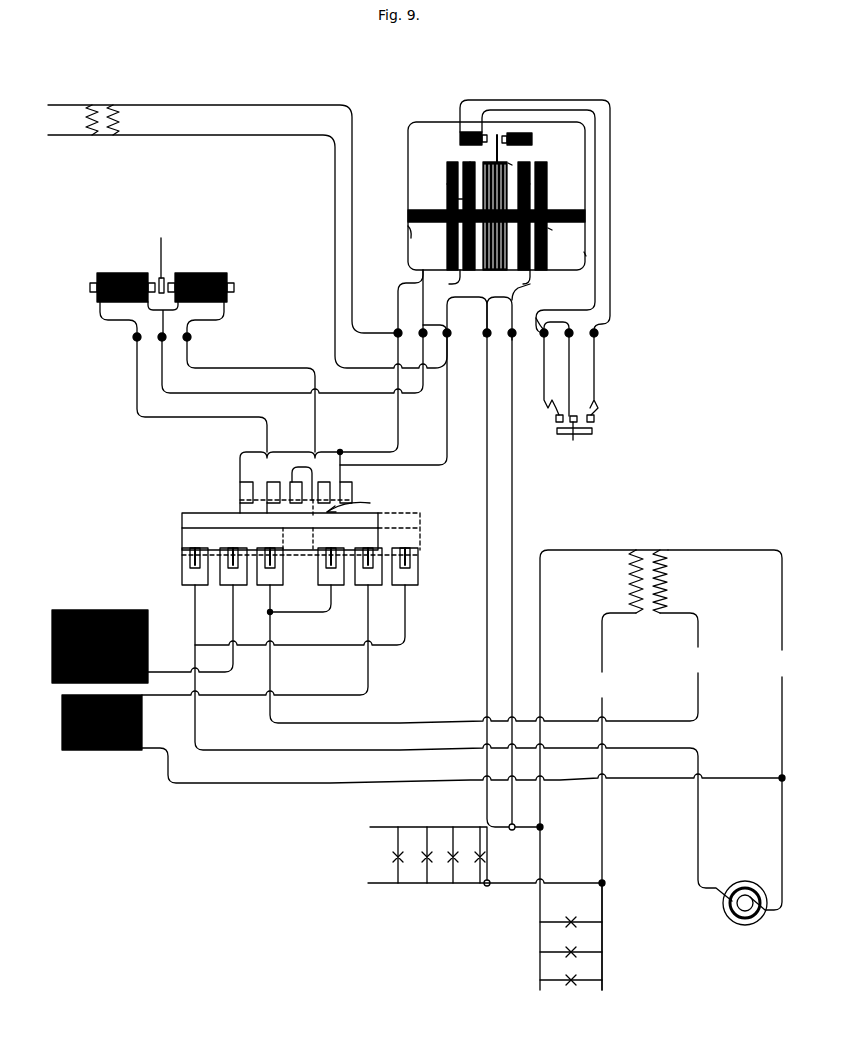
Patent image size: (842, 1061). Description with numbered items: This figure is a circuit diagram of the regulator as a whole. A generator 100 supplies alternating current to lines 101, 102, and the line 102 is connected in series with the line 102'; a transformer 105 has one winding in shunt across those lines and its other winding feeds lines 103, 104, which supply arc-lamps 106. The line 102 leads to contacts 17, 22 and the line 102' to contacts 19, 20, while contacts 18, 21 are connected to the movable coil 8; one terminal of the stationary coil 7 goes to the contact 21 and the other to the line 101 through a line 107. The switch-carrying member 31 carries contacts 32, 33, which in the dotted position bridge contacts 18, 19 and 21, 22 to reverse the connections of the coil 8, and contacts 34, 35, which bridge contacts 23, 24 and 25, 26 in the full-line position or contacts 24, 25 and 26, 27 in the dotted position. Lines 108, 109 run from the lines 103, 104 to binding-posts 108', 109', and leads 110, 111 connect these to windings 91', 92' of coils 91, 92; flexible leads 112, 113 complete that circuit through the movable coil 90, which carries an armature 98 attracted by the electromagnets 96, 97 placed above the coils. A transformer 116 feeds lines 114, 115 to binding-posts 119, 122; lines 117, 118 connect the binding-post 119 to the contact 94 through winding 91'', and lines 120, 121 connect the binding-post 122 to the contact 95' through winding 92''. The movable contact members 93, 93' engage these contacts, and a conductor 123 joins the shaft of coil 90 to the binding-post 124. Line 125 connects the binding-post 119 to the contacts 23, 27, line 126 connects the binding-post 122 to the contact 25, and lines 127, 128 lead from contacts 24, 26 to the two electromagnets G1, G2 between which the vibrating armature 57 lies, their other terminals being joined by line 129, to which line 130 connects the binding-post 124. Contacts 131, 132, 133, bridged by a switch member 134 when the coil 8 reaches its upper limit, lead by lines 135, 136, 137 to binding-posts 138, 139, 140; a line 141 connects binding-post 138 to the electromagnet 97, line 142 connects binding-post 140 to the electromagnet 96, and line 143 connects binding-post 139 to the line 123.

The stationary coil 7 is at (62, 720).
The movable coil 8 is at (52, 627).
The contact 17 is at (186, 583).
The contact 18 is at (236, 585).
The contact 19 is at (278, 584).
The contact 20 is at (339, 584).
The contact 21 is at (376, 584).
The contact 22 is at (414, 584).
The contact 23 is at (246, 492).
The contact 24 is at (272, 492).
The contact 25 is at (296, 492).
The contact 26 is at (322, 492).
The contact 27 is at (357, 490).
The switch-carrying member 31 is at (192, 518).
The contact 32 is at (202, 537).
The contact 33 is at (362, 535).
The contact 34 is at (243, 514).
The contact 35 is at (364, 503).
The vibrating armature 57 is at (164, 268).
The generator G1 is at (112, 276).
The generator G2 is at (212, 277).
The movable coil 90 is at (495, 224).
The coil 91 is at (461, 230).
The winding 91' is at (443, 200).
The winding 91'' is at (435, 179).
The coil 92 is at (532, 231).
The winding 92' is at (554, 166).
The winding 92'' is at (558, 178).
The movable contact member 93 is at (480, 240).
The movable contact member 93' is at (561, 200).
The contact member 94 is at (408, 209).
The pivot 95' is at (561, 234).
The electromagnet 96 is at (460, 137).
The electromagnet 97 is at (532, 137).
The armature 98 is at (487, 149).
The generator 100 is at (748, 927).
The line 101 is at (782, 702).
The line 102 is at (465, 743).
The line 102' is at (502, 654).
The line 103 is at (603, 552).
The line 104 is at (602, 620).
The transformer 105 is at (665, 598).
The arc-lamps 106 is at (430, 864).
The line 107 is at (268, 784).
The line 108 is at (513, 579).
The binding-post 108' is at (472, 346).
The line 109 is at (528, 579).
The binding-post 109' is at (530, 347).
The lead 110 is at (487, 309).
The lead 111 is at (512, 313).
The flexible lead 112 is at (472, 162).
The flexible lead 113 is at (510, 163).
The line 114 is at (335, 190).
The line 115 is at (352, 120).
The transformer 116 is at (107, 137).
The line 117 is at (408, 238).
The line 118 is at (397, 300).
The binding-post 119 is at (396, 337).
The line 120 is at (586, 252).
The line 121 is at (568, 290).
The binding-post 122 is at (448, 345).
The conductor 123 is at (424, 311).
The binding-post 124 is at (421, 338).
The line 125 is at (398, 438).
The line 126 is at (448, 438).
The line 127 is at (200, 424).
The line 128 is at (236, 371).
The line 129 is at (174, 306).
The line 130 is at (226, 397).
The contact 131 is at (556, 419).
The contact 132 is at (577, 430).
The contact 133 is at (597, 418).
The switch member 134 is at (594, 432).
The line 135 is at (545, 386).
The line 136 is at (570, 386).
The line 137 is at (596, 386).
The binding-post 138 is at (560, 323).
The binding-post 139 is at (571, 336).
The binding-post 140 is at (598, 335).
The line 141 is at (611, 257).
The line 142 is at (611, 291).
The line 143 is at (550, 314).